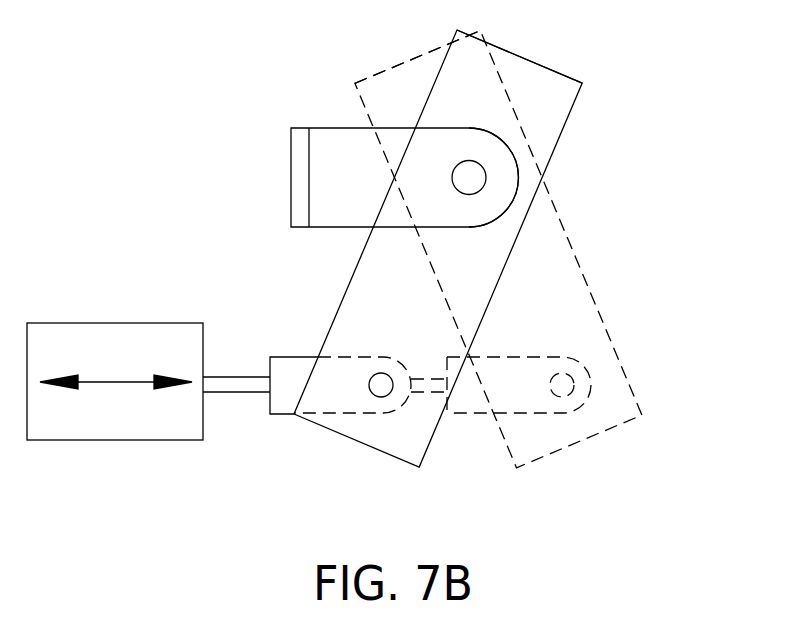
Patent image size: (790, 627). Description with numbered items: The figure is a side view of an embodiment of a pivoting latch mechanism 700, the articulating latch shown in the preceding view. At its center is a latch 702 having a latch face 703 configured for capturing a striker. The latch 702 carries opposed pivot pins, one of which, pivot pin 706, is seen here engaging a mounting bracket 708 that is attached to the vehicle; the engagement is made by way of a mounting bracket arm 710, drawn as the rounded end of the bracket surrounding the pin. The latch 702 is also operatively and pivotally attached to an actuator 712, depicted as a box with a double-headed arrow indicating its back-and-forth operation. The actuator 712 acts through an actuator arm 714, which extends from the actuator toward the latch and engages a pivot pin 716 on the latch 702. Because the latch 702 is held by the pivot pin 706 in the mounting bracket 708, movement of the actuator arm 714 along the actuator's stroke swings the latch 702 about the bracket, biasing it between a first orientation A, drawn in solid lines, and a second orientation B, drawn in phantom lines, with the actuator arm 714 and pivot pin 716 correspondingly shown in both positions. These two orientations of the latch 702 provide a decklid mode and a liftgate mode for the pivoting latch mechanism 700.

The pivoting latch mechanism 700 is at (138, 175).
The latch 702 is at (548, 113).
The latch face 703 is at (555, 71).
The pivot pin 706 is at (472, 178).
The mounting bracket 708 is at (303, 108).
The mounting bracket arm 710 is at (505, 160).
The actuator 712 is at (115, 323).
The actuator arm 714 is at (280, 405).
The pivot pin 716 is at (378, 397).